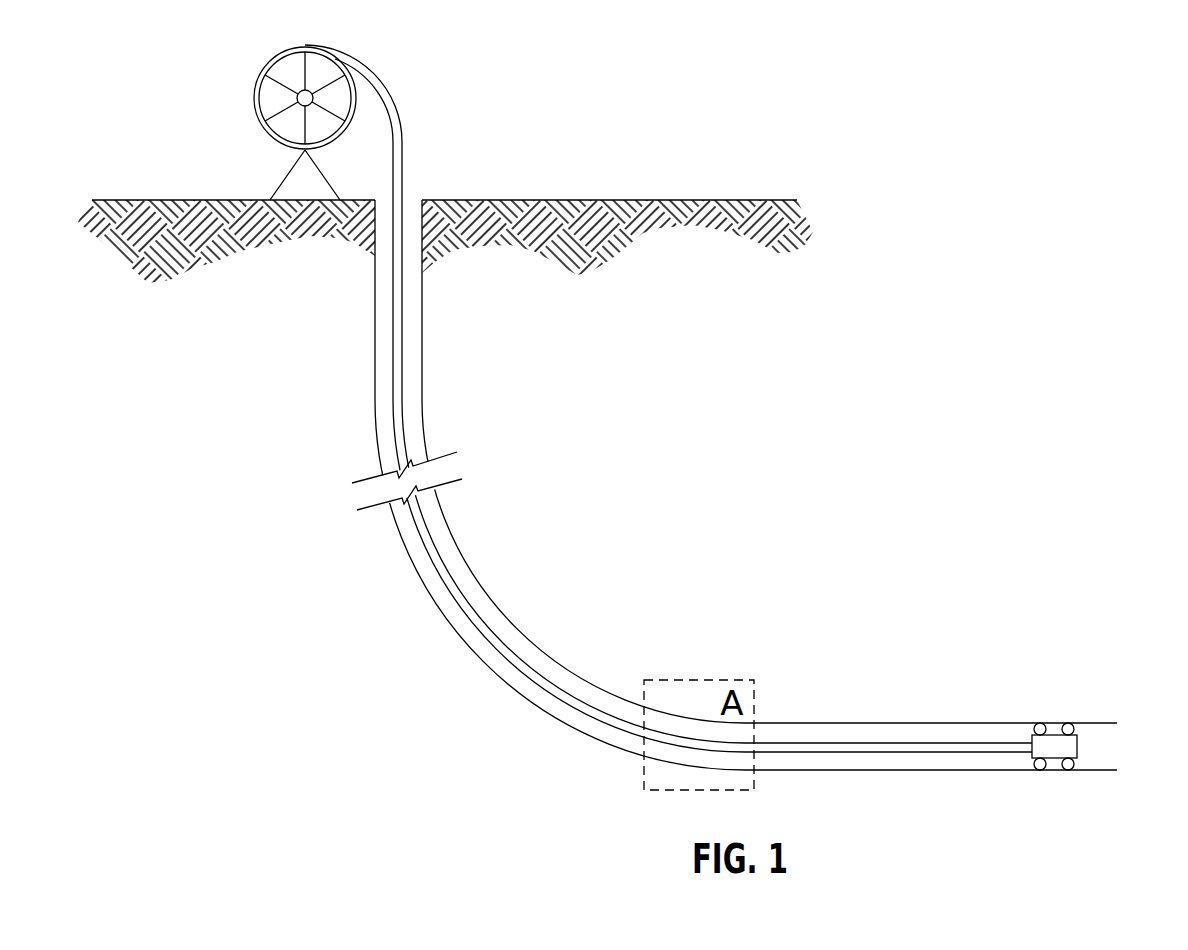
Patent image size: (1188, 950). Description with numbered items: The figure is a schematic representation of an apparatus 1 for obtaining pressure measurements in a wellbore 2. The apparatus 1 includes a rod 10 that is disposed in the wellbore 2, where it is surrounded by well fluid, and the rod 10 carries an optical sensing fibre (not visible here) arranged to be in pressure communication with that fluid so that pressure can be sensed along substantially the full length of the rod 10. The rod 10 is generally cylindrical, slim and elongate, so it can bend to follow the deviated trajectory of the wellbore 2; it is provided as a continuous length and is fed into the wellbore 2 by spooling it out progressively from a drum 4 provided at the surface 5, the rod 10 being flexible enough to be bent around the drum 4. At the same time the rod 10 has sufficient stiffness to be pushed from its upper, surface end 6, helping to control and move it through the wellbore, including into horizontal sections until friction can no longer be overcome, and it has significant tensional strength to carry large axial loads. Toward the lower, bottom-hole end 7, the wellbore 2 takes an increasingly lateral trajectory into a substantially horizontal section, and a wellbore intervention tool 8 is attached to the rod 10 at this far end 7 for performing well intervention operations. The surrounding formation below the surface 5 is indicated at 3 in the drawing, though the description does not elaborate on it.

The apparatus 1 is at (812, 82).
The wellbore 2 is at (1007, 722).
The subterranean formation 3 is at (573, 392).
The drum 4 is at (258, 92).
The surface 5 is at (556, 200).
The upper, surface end 6 is at (432, 163).
The lower, bottom-hole end 7 is at (1098, 748).
The wellbore intervention tool 8 is at (1053, 747).
The rod 10 is at (523, 657).